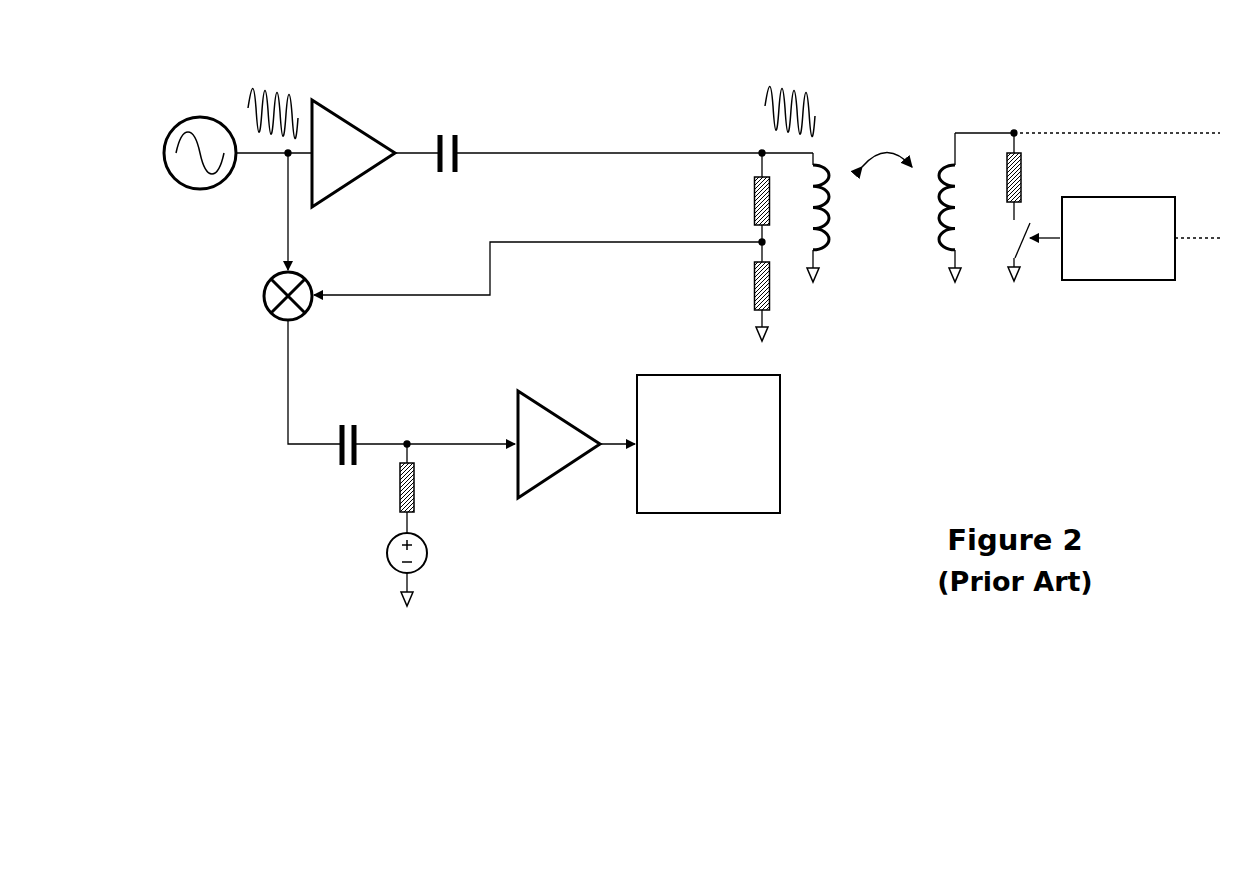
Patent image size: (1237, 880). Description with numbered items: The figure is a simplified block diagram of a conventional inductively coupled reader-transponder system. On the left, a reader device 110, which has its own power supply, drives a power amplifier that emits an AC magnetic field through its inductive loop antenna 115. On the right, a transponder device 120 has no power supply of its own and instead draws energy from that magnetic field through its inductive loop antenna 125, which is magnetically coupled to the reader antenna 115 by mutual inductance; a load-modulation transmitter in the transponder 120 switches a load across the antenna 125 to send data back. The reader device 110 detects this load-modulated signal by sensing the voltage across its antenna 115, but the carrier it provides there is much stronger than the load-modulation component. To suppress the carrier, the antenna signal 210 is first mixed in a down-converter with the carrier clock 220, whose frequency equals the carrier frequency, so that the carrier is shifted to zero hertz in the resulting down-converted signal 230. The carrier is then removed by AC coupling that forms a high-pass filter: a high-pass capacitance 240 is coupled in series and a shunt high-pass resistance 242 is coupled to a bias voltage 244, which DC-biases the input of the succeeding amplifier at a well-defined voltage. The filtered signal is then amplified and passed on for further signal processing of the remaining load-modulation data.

The reader device 110 is at (440, 42).
The transponder device 120 is at (1063, 40).
The carrier clock 220 is at (260, 73).
The antenna signal 210 is at (782, 78).
The inductive loop antenna of the reader device 115 is at (822, 254).
The inductive loop antenna of the transponder device 125 is at (947, 254).
The down-converted signal 230 is at (274, 382).
The AC coupling capacitance 240 is at (342, 500).
The shunt resistance 242 is at (393, 500).
The bias voltage 244 is at (430, 562).